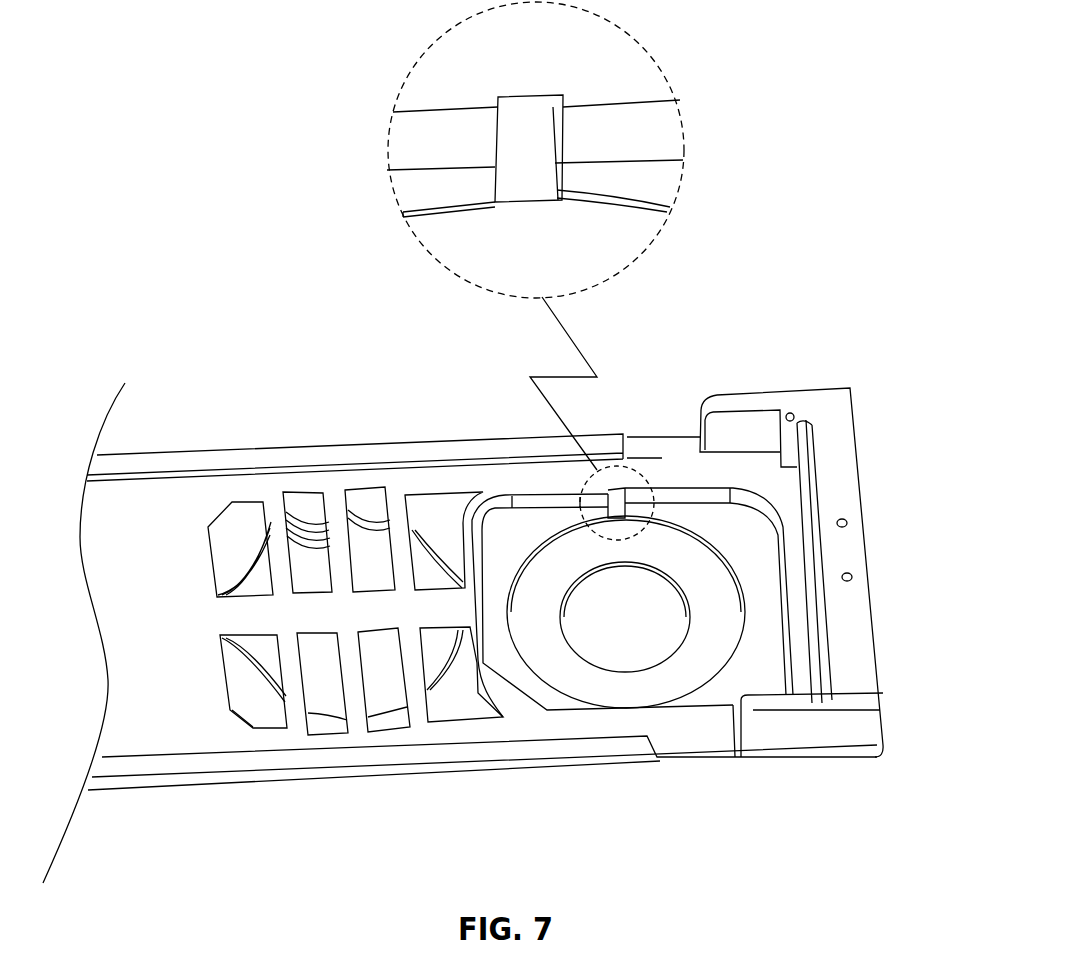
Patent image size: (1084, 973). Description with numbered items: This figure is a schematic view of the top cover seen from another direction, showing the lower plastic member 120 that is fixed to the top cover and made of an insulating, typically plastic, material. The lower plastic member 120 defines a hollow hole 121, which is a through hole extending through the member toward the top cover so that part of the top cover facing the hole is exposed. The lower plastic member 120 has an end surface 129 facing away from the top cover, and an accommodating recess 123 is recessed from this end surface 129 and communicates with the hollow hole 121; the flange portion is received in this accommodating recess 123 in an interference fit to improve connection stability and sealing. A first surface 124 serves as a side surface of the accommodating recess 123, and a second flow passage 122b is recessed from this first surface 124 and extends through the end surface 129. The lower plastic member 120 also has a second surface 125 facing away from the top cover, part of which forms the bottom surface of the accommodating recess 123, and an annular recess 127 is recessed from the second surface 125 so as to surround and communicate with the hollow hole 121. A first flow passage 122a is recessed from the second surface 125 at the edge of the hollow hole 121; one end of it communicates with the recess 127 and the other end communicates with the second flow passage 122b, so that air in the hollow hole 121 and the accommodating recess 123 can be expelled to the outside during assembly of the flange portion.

The lower plastic member 120 is at (262, 384).
The hollow hole 121 is at (672, 605).
The first flow passage 122a is at (521, 206).
The second flow passage 122b is at (548, 140).
The accommodating recess 123 is at (727, 528).
The first surface 124 is at (542, 503).
The second surface 125 is at (760, 662).
The recess 127 is at (699, 665).
The end surface 129 is at (173, 669).